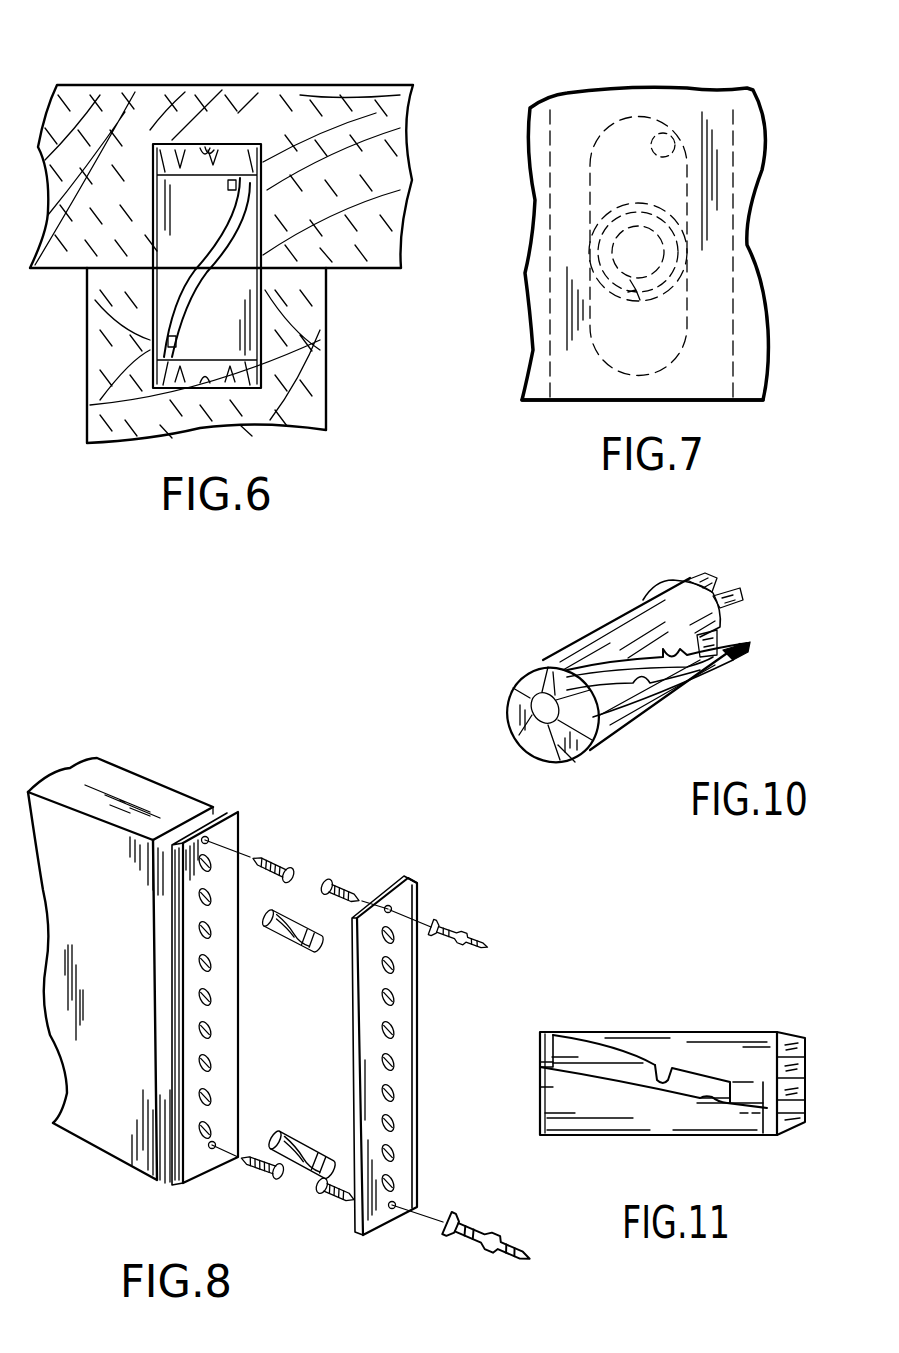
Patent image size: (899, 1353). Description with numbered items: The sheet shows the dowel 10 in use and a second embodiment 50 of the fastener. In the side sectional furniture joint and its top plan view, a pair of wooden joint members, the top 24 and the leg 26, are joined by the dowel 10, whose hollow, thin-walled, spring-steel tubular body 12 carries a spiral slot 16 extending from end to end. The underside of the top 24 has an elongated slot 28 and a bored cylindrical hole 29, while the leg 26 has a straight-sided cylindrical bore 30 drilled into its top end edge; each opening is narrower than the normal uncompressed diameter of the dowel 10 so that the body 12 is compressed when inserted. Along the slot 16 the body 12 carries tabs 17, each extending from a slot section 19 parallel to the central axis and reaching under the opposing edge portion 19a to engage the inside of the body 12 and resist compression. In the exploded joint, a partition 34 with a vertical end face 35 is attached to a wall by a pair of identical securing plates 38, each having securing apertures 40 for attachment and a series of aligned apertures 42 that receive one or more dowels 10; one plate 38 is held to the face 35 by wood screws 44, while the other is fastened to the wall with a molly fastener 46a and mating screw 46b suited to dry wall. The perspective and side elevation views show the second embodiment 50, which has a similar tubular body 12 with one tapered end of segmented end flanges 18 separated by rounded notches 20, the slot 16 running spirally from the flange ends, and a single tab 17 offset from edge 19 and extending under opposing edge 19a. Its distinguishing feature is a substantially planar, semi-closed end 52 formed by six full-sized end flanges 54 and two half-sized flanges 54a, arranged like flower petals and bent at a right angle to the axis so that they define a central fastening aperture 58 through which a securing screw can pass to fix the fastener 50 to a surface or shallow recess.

In FIG. 6, the dowel 10 is at (270, 217).
In FIG. 7, the dowel 10 is at (673, 213).
In FIG. 8, the dowel 10 is at (279, 958).
In FIG. 10, the tubular body 12 is at (668, 619).
In FIG. 11, the tubular body 12 is at (638, 1028).
In FIG. 6, the spiral slot 16 is at (196, 263).
In FIG. 10, the spiral slot 16 is at (663, 680).
In FIG. 11, the spiral slot 16 is at (668, 1080).
In FIG. 6, the tab 17 is at (229, 186).
In FIG. 10, the tab 17 is at (727, 622).
In FIG. 11, the tab 17 is at (745, 1095).
In FIG. 10, the segmented end flanges 18 is at (735, 595).
In FIG. 11, the segmented end flanges 18 is at (798, 1080).
In FIG. 10, the slot section 19 is at (680, 655).
In FIG. 11, the slot section 19 is at (795, 1113).
In FIG. 10, the opposing slot edge portion 19a is at (730, 665).
In FIG. 11, the opposing slot edge portion 19a is at (703, 1100).
In FIG. 10, the notches 20 is at (710, 575).
In FIG. 11, the notches 20 is at (793, 1038).
In FIG. 6, the top 24 is at (166, 87).
In FIG. 7, the top 24 is at (540, 123).
In FIG. 6, the leg 26 is at (101, 364).
In FIG. 7, the leg 26 is at (592, 383).
In FIG. 6, the elongated slot 28 is at (217, 152).
In FIG. 7, the elongated slot 28 is at (675, 148).
In FIG. 6, the cylindrical hole 29 is at (209, 150).
In FIG. 7, the cylindrical hole 29 is at (663, 145).
In FIG. 6, the cylindrical bore 30 is at (247, 391).
In FIG. 8, the partition 34 is at (140, 790).
In FIG. 8, the end face 35 is at (168, 1040).
In FIG. 8, the securing plate 38 is at (245, 1075).
In FIG. 8, the securing aperture 40 is at (235, 830).
In FIG. 8, the dowel-receiving aperture 42 is at (200, 933).
In FIG. 8, the wood screws 44 is at (273, 855).
In FIG. 8, the molly fastener 46a is at (477, 933).
In FIG. 8, the mating screw 46b is at (347, 880).
In FIG. 10, the second embodiment dowel fastener 50 is at (560, 621).
In FIG. 11, the second embodiment dowel fastener 50 is at (736, 1004).
In FIG. 10, the semi-closed end 52 is at (500, 672).
In FIG. 11, the semi-closed end 52 is at (528, 1043).
In FIG. 10, the end flanges 54 is at (537, 737).
In FIG. 10, the half-sized end flanges 54a is at (600, 708).
In FIG. 11, the half-sized end flanges 54a is at (538, 1062).
In FIG. 10, the central fastening aperture 58 is at (532, 702).
In FIG. 11, the central fastening aperture 58 is at (540, 1087).